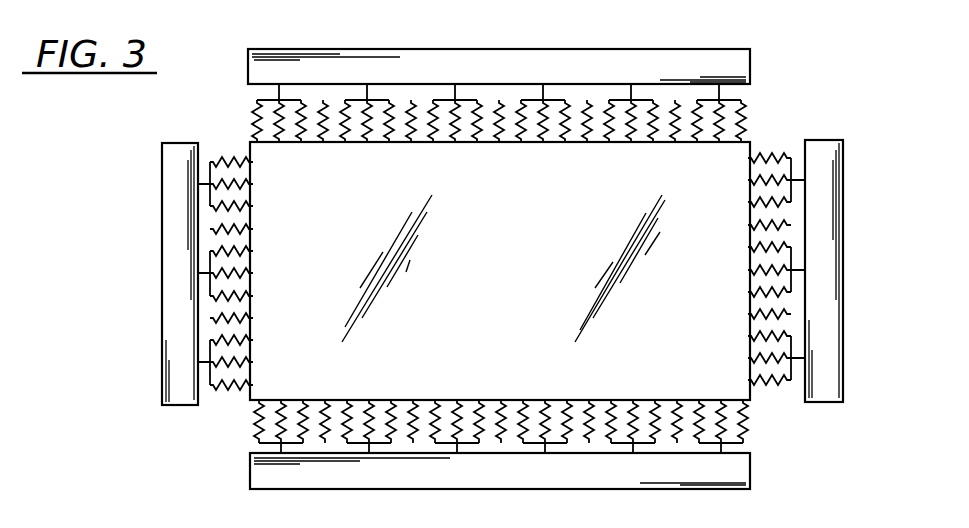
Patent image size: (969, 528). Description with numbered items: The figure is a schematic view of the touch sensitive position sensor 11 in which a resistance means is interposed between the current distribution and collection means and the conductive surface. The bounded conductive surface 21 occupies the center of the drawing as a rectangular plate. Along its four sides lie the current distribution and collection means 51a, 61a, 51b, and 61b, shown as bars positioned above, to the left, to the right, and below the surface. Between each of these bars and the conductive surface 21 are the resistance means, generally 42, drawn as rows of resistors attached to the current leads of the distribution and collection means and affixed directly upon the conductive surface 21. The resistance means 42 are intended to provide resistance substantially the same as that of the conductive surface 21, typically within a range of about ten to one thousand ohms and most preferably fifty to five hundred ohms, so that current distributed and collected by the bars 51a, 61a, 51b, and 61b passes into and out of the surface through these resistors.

The touch sensitive position sensor 11 is at (833, 71).
The conductive surface 21 is at (507, 281).
The resistance means 42 is at (748, 101).
The current distribution and collection means 61a is at (548, 66).
The current distribution and collection means 61b is at (180, 286).
The current distribution and collection means 51a is at (737, 465).
The current distribution and collection means 51b is at (828, 324).